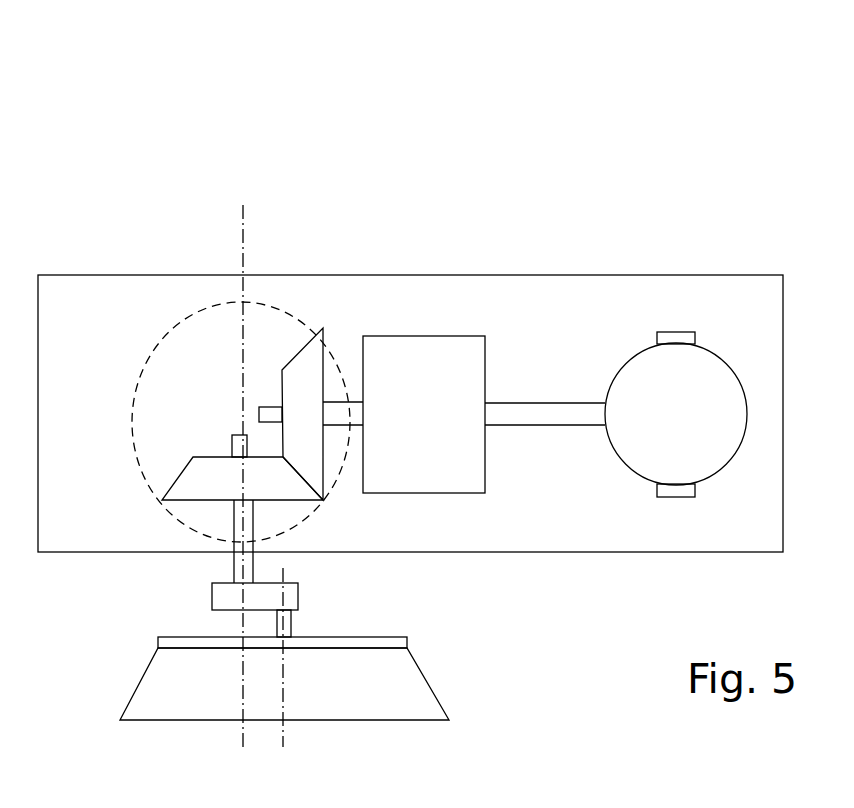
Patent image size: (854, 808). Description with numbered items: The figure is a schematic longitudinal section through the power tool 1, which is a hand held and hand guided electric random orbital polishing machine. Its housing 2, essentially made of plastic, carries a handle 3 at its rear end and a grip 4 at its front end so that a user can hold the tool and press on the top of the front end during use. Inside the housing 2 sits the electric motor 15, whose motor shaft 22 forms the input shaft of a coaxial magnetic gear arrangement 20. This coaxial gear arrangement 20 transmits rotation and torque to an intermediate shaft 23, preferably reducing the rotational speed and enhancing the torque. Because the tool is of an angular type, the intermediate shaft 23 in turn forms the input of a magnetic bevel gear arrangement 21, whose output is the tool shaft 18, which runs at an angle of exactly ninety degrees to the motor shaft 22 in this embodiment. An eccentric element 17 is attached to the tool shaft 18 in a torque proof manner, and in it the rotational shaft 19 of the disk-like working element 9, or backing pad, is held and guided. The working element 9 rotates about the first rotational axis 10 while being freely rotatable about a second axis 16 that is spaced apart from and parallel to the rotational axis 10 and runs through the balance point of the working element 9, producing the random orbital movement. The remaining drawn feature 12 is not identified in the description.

The power tool 1 is at (657, 122).
The housing 2 is at (458, 275).
The handle 3 is at (755, 275).
The grip 4 is at (180, 275).
The working element 9 is at (403, 641).
The rotational axis 10 is at (239, 737).
The base 12 is at (417, 697).
The electric motor 15 is at (677, 385).
The second axis 16 is at (282, 732).
The eccentric element 17 is at (222, 597).
The tool shaft 18 is at (237, 513).
The rotational shaft 19 is at (293, 618).
The coaxial magnetic gear arrangement 20 is at (412, 352).
The magnetic bevel gear arrangement 21 is at (147, 364).
The motor shaft 22 is at (550, 413).
The intermediate shaft 23 is at (358, 400).